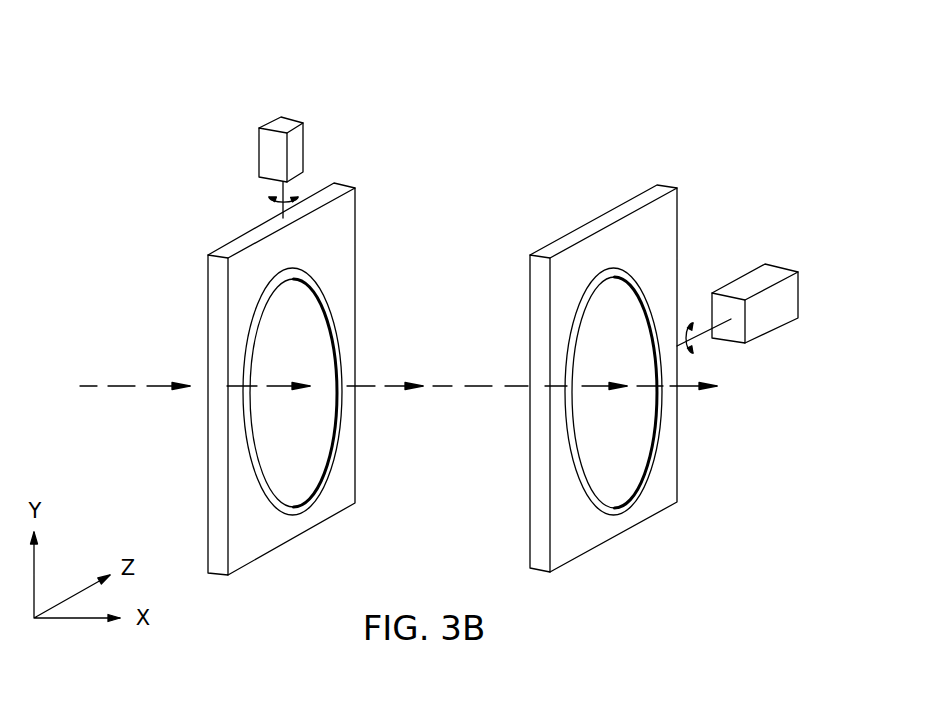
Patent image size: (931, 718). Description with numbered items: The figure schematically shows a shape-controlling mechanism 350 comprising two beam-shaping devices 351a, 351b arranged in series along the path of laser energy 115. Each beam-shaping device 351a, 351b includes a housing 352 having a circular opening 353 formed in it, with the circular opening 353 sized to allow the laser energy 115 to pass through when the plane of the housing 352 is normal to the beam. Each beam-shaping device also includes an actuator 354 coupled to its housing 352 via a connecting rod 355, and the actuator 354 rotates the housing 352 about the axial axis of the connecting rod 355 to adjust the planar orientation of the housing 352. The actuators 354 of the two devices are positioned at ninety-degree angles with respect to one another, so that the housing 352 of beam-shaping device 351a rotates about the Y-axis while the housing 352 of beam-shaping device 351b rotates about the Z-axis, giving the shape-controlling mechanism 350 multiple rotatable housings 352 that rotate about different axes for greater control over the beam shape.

The shape-controlling mechanism 350 is at (152, 105).
The beam-shaping device 351a is at (320, 165).
The beam-shaping device 351b is at (672, 172).
The housing 352 is at (358, 222).
The circular opening 353 is at (312, 349).
The actuator 354 is at (283, 126).
The connecting rod 355 is at (266, 198).
The laser energy 115 is at (443, 384).